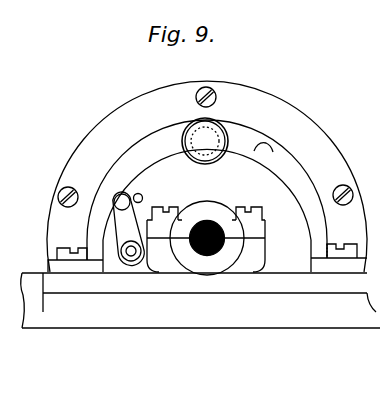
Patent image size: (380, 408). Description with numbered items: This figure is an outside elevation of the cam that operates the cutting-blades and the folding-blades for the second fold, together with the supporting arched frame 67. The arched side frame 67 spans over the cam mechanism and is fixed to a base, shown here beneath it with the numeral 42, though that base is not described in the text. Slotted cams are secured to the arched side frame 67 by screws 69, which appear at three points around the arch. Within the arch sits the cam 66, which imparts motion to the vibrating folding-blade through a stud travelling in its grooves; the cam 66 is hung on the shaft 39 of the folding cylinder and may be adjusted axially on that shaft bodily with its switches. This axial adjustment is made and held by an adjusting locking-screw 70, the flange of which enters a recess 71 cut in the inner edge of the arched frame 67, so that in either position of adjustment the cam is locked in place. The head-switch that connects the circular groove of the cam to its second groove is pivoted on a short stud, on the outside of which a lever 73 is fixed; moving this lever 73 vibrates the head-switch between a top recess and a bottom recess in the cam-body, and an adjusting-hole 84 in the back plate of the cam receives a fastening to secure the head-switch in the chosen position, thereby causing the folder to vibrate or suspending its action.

The shaft 39 is at (208, 254).
The base plate 42 is at (200, 300).
The cam 66 is at (224, 172).
The arched side frame 67 is at (292, 140).
The screw 69 is at (216, 95).
The adjusting locking-screw 70 is at (205, 141).
The recess 71 is at (260, 149).
The lever 73 is at (128, 229).
The adjusting-hole 84 is at (146, 192).